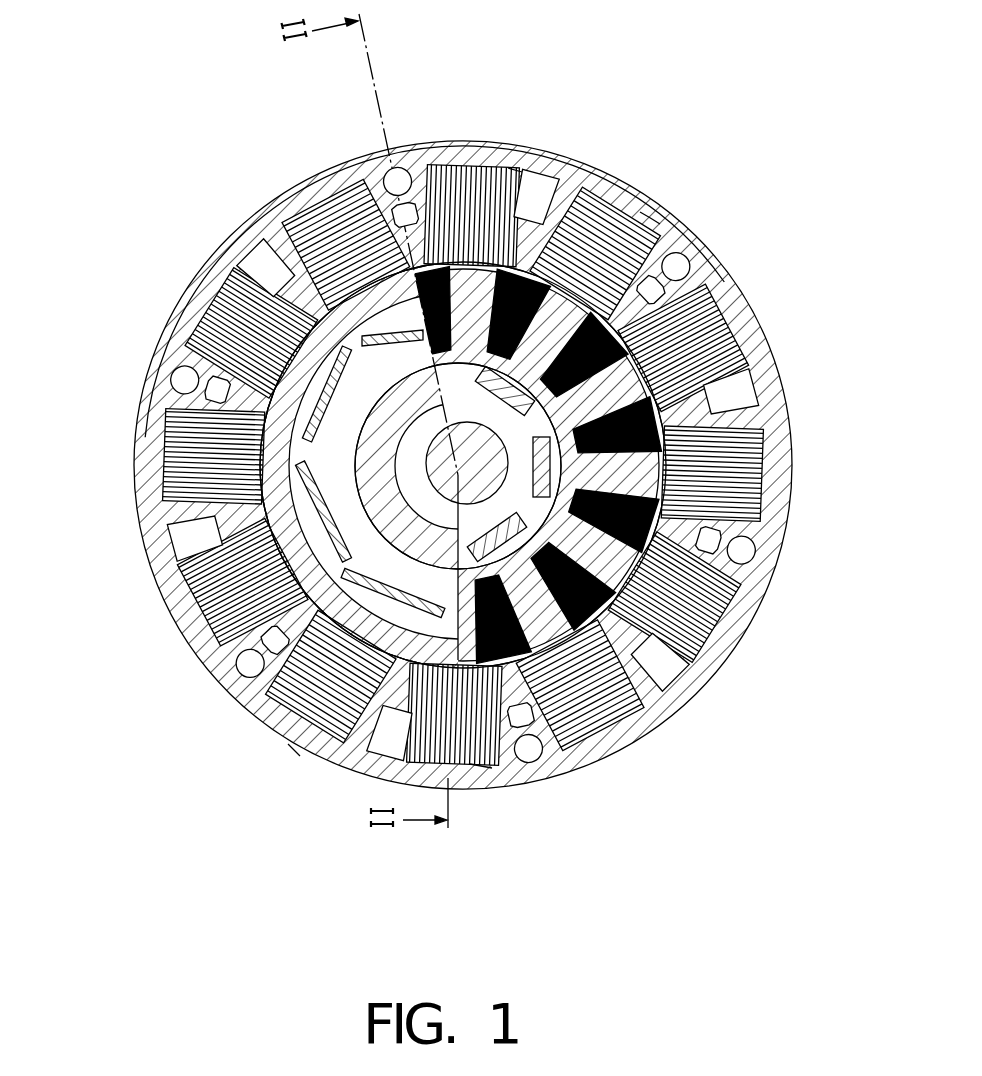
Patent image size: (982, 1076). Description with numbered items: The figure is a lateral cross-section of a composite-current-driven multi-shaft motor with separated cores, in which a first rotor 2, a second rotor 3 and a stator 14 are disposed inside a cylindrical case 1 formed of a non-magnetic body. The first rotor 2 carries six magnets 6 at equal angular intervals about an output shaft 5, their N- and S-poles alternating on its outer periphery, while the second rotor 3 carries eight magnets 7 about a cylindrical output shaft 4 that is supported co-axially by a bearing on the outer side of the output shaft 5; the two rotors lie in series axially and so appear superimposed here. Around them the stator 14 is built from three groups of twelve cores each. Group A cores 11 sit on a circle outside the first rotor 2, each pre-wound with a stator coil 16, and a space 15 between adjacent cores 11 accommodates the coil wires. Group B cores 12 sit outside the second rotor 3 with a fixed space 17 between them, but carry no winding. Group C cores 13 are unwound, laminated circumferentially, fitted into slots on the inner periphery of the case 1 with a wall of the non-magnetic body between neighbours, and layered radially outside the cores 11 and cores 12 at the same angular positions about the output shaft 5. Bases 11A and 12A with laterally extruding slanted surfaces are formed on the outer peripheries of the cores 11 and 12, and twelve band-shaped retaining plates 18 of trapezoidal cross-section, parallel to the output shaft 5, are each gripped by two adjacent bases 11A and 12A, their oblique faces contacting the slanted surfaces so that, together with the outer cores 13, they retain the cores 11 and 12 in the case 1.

The case 1 is at (752, 580).
The first rotor 2 is at (710, 648).
The second rotor 3 is at (222, 615).
The output shaft 4 is at (377, 487).
The output shaft 5 is at (483, 464).
The magnets 6 is at (718, 318).
The magnets 7 is at (394, 185).
The core 11 is at (607, 725).
The core 12 is at (284, 674).
The core 13 is at (372, 777).
The stator 14 is at (461, 471).
The base 11A is at (484, 770).
The base 12A is at (292, 748).
The space 15 is at (514, 170).
The stator coil 16 is at (650, 218).
The fixed space 17 is at (195, 305).
The retaining plate 18 is at (287, 280).